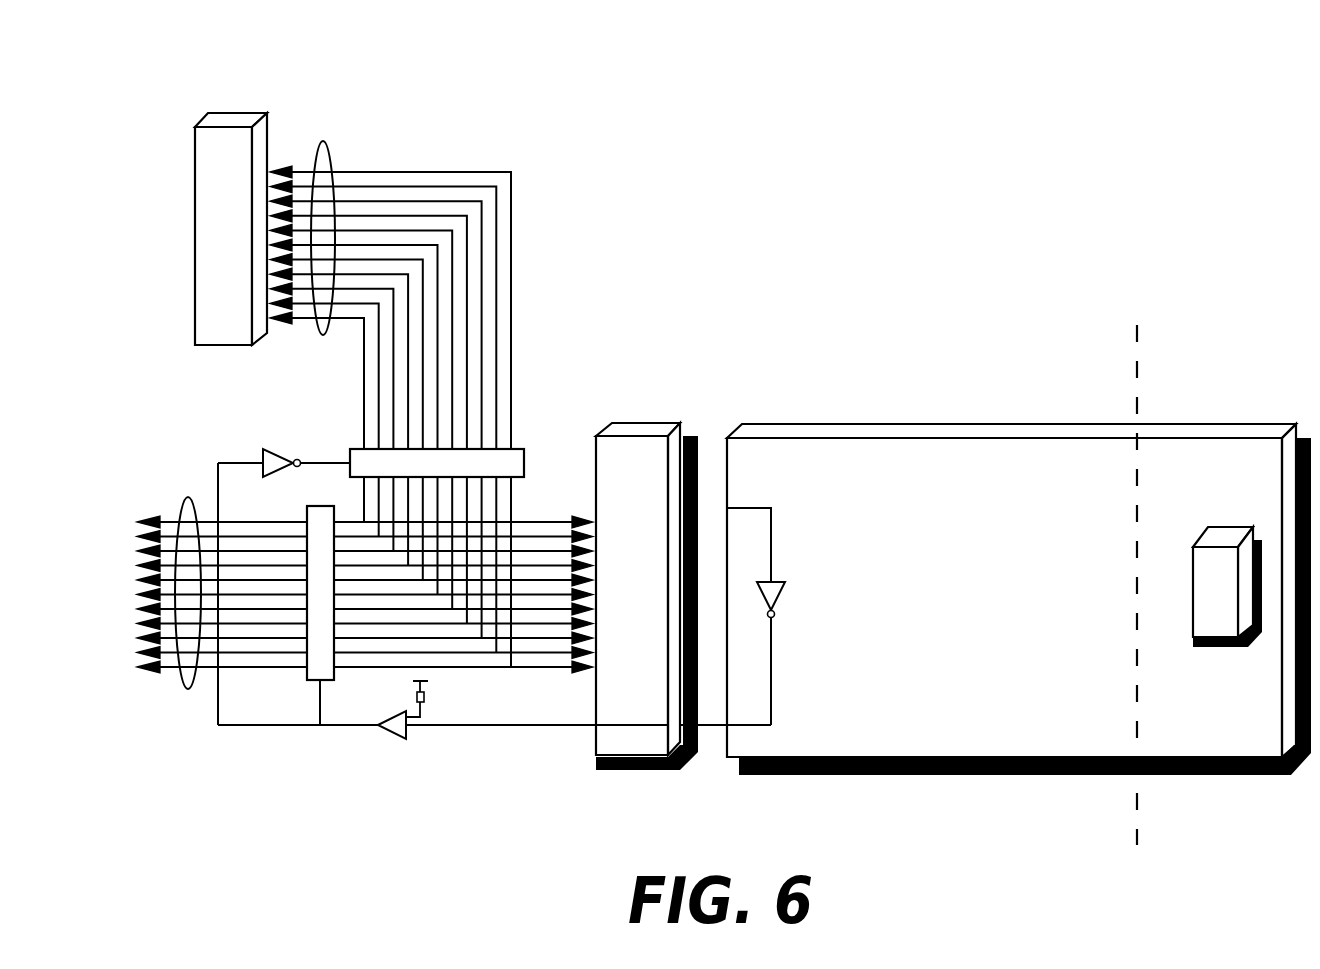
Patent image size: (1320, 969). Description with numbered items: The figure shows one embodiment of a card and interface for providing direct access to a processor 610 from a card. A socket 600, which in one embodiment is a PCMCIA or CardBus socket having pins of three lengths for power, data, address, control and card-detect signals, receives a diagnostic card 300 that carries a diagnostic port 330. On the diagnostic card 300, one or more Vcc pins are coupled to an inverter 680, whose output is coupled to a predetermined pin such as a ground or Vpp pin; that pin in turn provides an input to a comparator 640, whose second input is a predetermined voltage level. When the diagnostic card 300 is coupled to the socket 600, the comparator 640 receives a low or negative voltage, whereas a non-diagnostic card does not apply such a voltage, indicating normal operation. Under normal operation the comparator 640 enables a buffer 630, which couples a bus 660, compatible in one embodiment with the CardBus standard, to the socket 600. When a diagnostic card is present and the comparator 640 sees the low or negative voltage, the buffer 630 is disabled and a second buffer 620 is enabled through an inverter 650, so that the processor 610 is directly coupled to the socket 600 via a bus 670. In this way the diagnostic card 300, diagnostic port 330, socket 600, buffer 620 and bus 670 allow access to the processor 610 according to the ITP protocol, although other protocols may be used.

The diagnostic card 300 is at (947, 420).
The diagnostic port 330 is at (1228, 520).
The socket 600 is at (589, 763).
The processor 610 is at (246, 105).
The buffer 620 is at (535, 455).
The buffer 630 is at (300, 677).
The comparator 640 is at (391, 750).
The inverter 650 is at (270, 442).
The bus 660 is at (179, 681).
The bus 670 is at (347, 148).
The inverter 680 is at (796, 585).